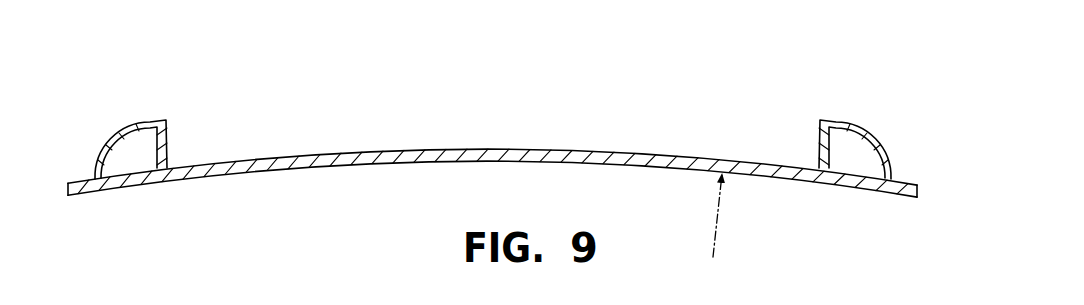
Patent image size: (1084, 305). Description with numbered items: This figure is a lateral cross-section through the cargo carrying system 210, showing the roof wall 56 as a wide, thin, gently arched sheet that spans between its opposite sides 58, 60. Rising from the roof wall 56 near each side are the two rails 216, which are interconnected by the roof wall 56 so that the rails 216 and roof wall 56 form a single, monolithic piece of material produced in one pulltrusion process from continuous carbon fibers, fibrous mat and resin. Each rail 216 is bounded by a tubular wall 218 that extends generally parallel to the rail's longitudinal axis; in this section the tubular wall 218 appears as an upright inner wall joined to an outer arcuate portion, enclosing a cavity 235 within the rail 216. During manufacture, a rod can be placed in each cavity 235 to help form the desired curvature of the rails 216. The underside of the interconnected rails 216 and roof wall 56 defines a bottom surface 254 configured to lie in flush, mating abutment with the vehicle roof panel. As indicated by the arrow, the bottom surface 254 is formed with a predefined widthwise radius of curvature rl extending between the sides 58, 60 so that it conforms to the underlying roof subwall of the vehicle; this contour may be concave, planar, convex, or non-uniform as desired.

The roof wall 56 is at (480, 148).
The bottom surface 254 is at (398, 166).
The side of the roof wall 60 is at (68, 196).
The side of the roof wall 58 is at (919, 198).
The rail 216 is at (140, 122).
The cavity 235 is at (128, 150).
The tubular wall 218 is at (166, 140).
The cargo carrying system 210 is at (629, 71).
The radius of curvature rl is at (717, 210).